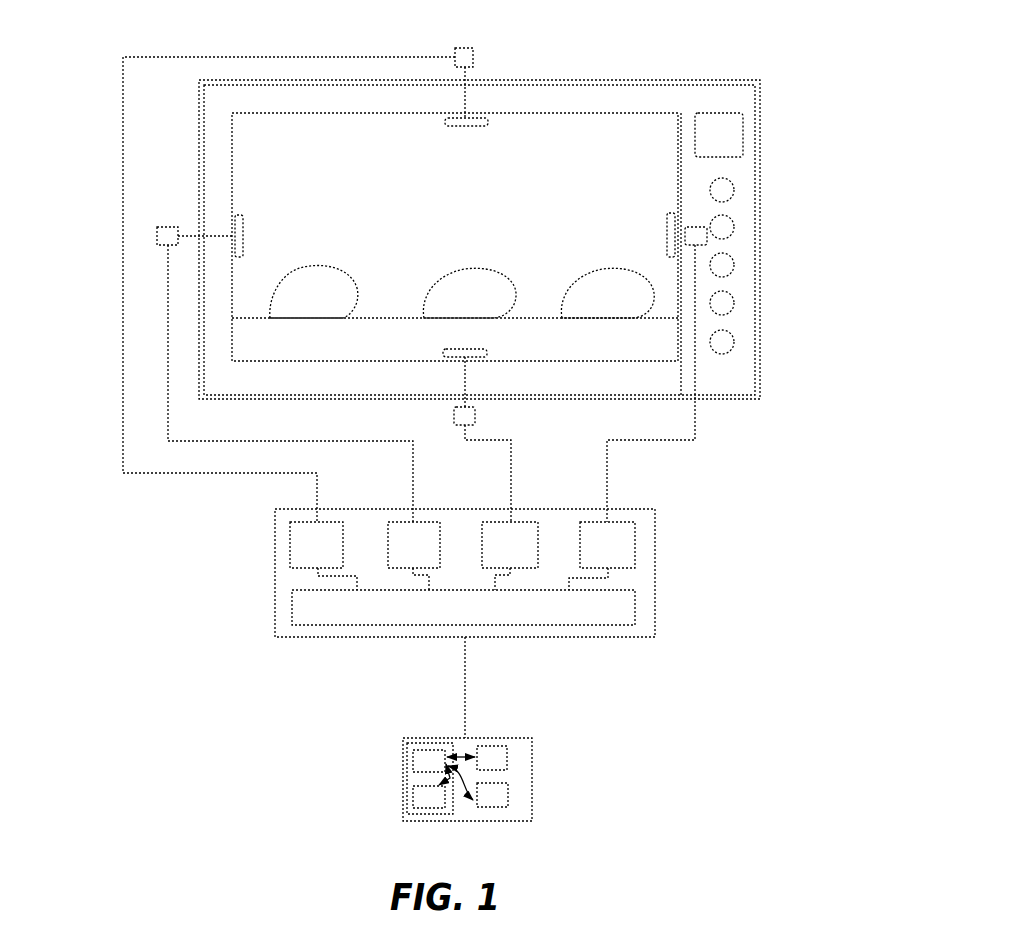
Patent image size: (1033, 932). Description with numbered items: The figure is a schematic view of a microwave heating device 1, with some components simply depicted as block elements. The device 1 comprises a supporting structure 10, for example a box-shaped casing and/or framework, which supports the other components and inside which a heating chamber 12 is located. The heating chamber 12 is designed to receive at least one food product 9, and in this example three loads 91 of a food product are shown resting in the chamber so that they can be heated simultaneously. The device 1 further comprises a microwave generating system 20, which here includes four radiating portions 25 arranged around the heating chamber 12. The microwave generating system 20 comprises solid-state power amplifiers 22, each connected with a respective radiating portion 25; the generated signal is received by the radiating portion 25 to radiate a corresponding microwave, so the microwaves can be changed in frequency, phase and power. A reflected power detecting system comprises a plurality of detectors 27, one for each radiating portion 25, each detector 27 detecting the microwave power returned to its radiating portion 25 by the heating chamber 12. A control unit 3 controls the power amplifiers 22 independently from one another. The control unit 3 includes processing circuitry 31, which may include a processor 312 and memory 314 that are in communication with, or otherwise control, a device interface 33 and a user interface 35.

The microwave heating device 1 is at (788, 68).
The supporting structure 10 is at (609, 80).
The heating chamber 12 is at (317, 180).
The loads 91 is at (327, 279).
The food product 9 is at (278, 282).
The radiating portions 25 is at (445, 122).
The detectors 27 is at (455, 56).
The microwave generating system 20 is at (466, 623).
The solid-state power amplifiers 22 is at (597, 553).
The control unit 3 is at (490, 772).
The processing circuitry 31 is at (387, 785).
The processor 312 is at (425, 767).
The memory 314 is at (430, 796).
The device interface 33 is at (492, 758).
The user interface 35 is at (495, 797).